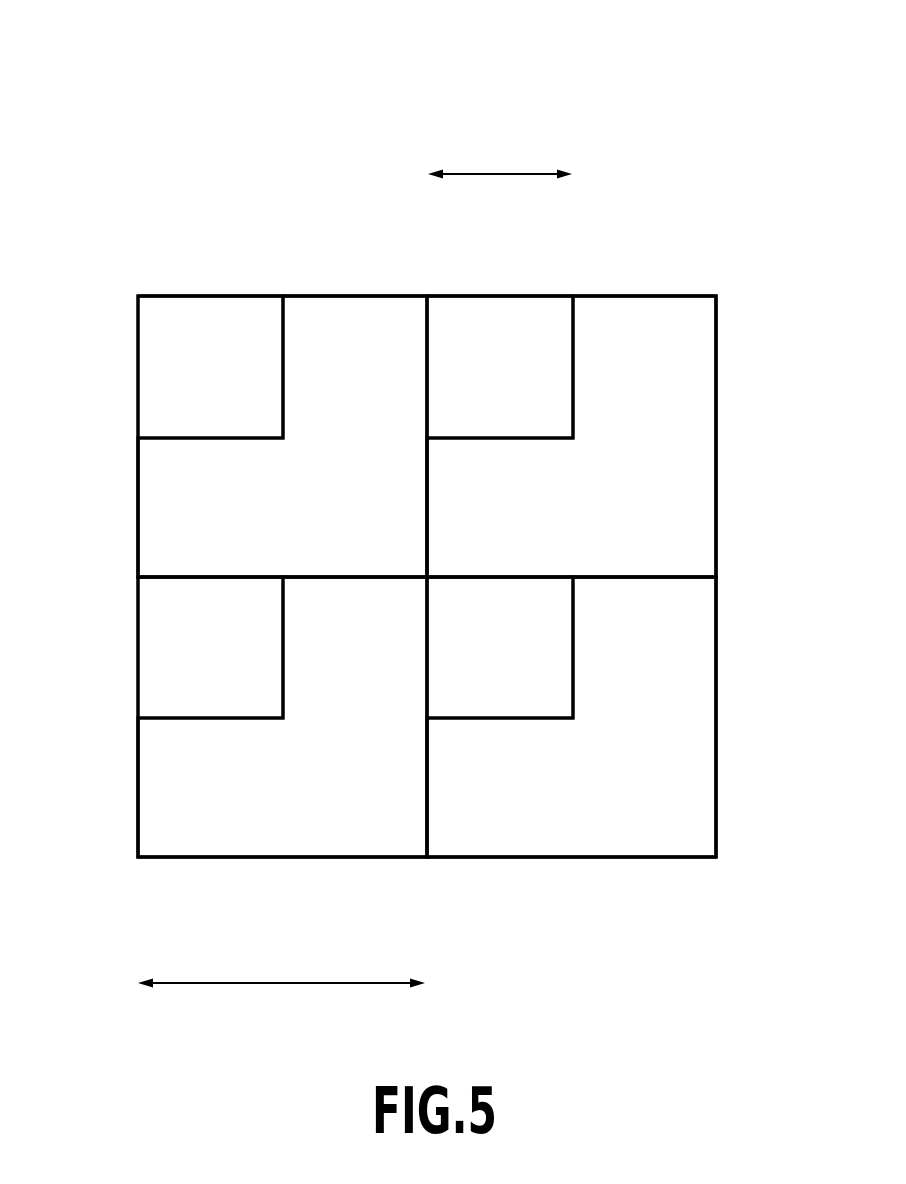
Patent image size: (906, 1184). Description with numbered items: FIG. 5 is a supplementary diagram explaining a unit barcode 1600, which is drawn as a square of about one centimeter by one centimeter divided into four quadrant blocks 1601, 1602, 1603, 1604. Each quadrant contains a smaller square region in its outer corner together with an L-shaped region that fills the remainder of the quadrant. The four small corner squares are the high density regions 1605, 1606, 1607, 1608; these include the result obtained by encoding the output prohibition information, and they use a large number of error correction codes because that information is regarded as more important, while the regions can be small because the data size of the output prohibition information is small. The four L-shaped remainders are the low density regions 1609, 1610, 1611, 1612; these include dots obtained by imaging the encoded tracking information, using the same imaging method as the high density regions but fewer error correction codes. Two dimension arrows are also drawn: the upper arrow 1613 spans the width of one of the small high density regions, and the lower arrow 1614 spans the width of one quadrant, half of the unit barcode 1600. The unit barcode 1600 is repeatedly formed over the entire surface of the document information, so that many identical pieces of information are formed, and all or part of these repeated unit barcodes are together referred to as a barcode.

The unit barcode 1600 is at (430, 97).
The first pixel 1601 is at (305, 295).
The second pixel 1602 is at (595, 295).
The third pixel 1603 is at (283, 858).
The fourth pixel 1604 is at (573, 858).
The high density region 1605 is at (208, 305).
The high density region 1606 is at (498, 305).
The high density region 1607 is at (212, 705).
The high density region 1608 is at (502, 705).
The low density region 1609 is at (378, 305).
The low density region 1610 is at (668, 305).
The low density region 1611 is at (360, 852).
The low density region 1612 is at (648, 852).
The sub-pixel width 1613 is at (500, 173).
The pixel width 1614 is at (293, 984).